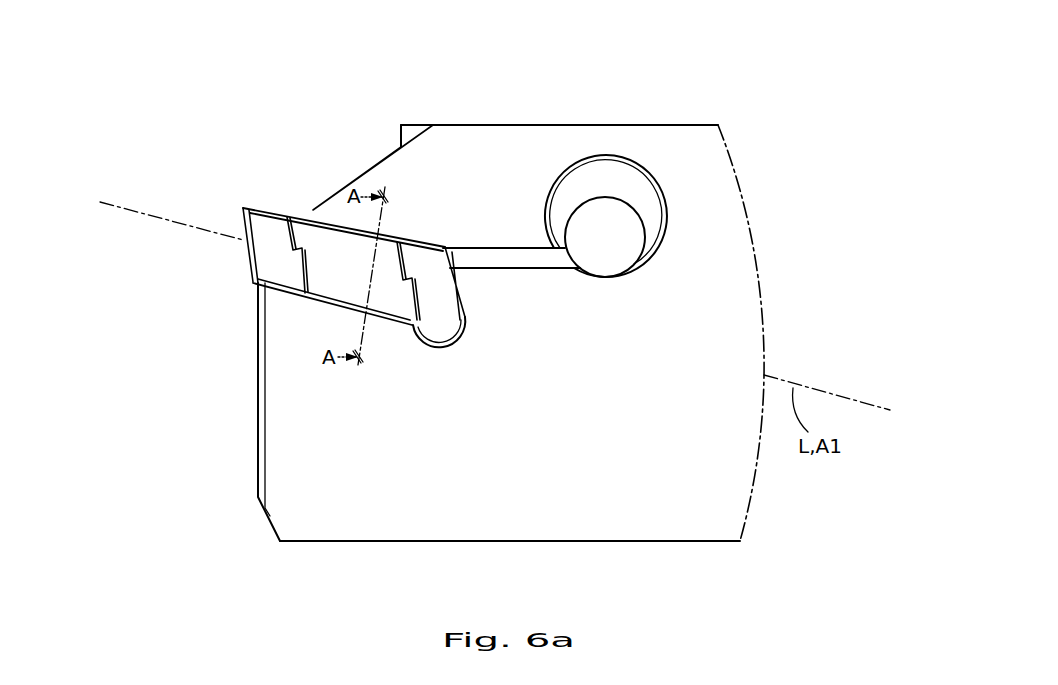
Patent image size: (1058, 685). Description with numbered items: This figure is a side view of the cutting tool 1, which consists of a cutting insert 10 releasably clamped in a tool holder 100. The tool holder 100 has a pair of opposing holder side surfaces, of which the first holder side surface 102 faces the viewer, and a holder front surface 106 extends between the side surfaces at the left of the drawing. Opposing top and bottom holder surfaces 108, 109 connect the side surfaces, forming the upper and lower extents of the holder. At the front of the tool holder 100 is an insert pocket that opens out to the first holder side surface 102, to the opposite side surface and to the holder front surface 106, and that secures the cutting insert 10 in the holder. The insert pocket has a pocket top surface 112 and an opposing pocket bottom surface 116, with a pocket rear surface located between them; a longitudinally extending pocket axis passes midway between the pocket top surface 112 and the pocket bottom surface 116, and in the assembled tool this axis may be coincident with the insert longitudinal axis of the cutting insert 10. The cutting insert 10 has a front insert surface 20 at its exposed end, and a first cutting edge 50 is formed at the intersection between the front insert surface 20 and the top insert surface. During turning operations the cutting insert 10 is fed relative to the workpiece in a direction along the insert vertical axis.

The cutting tool 1 is at (781, 40).
The cutting insert 10 is at (137, 232).
The front insert surface 20 is at (192, 272).
The first cutting edge 50 is at (243, 207).
The tool holder 100 is at (798, 148).
The first holder side surface 102 is at (297, 522).
The holder front surface 106 is at (258, 478).
The top holder surface 108 is at (562, 125).
The bottom holder surface 109 is at (560, 541).
The pocket top surface 112 is at (343, 229).
The pocket bottom surface 116 is at (338, 297).